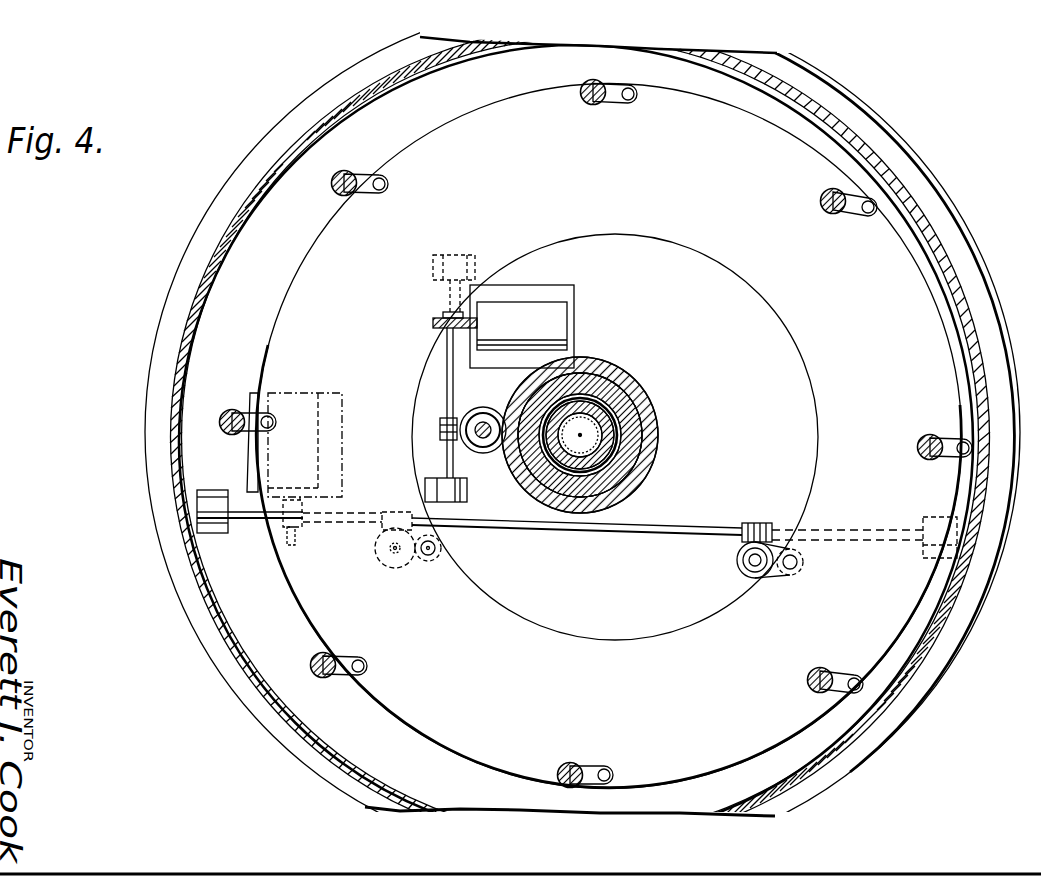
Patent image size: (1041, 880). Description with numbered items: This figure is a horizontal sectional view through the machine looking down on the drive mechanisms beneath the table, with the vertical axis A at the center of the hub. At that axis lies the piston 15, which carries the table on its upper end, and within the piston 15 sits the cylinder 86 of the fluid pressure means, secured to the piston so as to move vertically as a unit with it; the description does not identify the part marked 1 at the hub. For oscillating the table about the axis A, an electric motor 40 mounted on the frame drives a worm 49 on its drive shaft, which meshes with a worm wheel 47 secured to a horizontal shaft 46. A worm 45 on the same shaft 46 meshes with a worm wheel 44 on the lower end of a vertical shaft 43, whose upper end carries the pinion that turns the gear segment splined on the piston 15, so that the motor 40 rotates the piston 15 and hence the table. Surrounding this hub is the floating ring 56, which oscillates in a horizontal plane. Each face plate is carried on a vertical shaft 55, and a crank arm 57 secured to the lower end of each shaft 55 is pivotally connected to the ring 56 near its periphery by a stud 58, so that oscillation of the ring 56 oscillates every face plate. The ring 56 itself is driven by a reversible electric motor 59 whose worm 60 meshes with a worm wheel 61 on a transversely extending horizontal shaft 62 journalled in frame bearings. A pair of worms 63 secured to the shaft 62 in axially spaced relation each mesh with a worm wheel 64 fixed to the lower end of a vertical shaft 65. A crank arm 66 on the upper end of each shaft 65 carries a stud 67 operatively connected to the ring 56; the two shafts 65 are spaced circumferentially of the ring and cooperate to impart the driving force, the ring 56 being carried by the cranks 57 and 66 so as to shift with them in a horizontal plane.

The hub 1 is at (619, 377).
The vertical axis A is at (582, 434).
The piston 15 is at (622, 430).
The cylinder 86 is at (606, 450).
The electric motor 40 is at (565, 314).
The vertical shaft 43 is at (488, 440).
The worm wheel 44 is at (487, 407).
The worm 45 is at (440, 428).
The horizontal shaft 46 is at (454, 391).
The worm wheel 47 is at (470, 323).
The worm 49 is at (464, 344).
The vertical shaft 55 is at (590, 105).
The floating ring 56 is at (806, 350).
The crank arm 57 is at (620, 103).
The stud 58 is at (636, 99).
The reversible electric motor 59 is at (322, 399).
The worm 60 is at (304, 530).
The worm wheel 61 is at (296, 548).
The horizontal shaft 62 is at (532, 527).
The worms 63 is at (398, 511).
The worm wheel 64 is at (384, 561).
The vertical shaft 65 is at (398, 556).
The crank arm 66 is at (422, 558).
The stud 67 is at (436, 548).